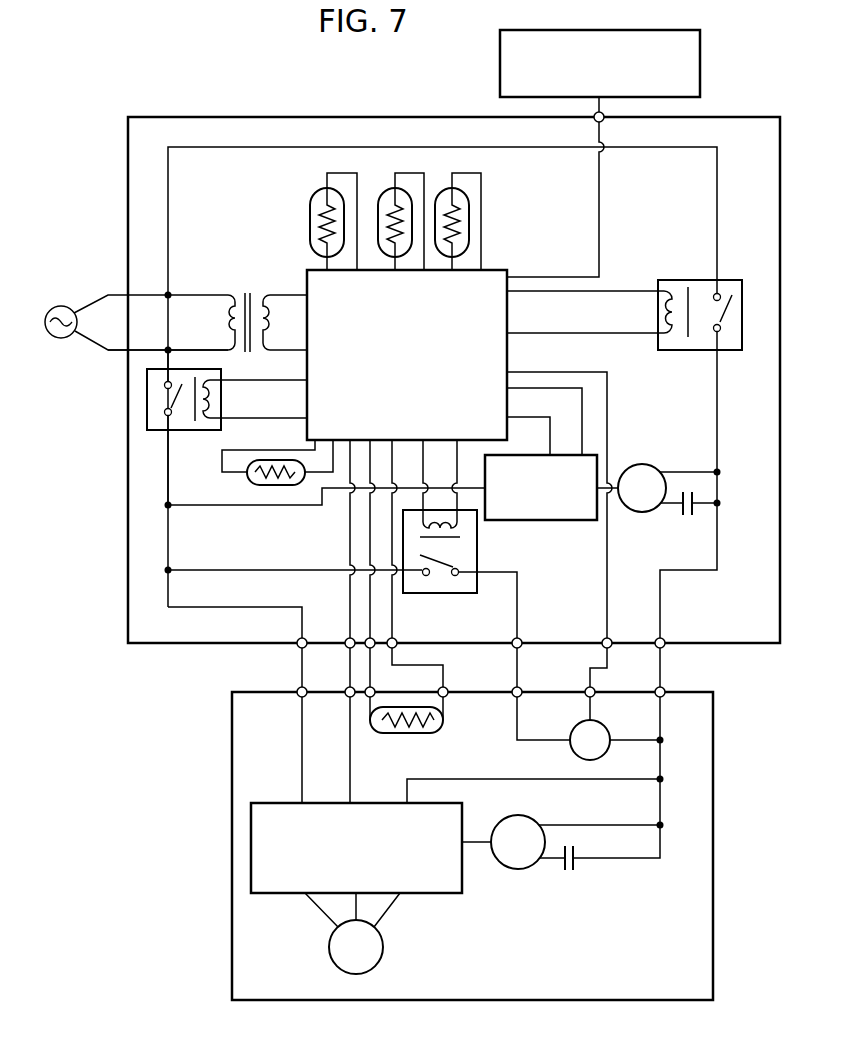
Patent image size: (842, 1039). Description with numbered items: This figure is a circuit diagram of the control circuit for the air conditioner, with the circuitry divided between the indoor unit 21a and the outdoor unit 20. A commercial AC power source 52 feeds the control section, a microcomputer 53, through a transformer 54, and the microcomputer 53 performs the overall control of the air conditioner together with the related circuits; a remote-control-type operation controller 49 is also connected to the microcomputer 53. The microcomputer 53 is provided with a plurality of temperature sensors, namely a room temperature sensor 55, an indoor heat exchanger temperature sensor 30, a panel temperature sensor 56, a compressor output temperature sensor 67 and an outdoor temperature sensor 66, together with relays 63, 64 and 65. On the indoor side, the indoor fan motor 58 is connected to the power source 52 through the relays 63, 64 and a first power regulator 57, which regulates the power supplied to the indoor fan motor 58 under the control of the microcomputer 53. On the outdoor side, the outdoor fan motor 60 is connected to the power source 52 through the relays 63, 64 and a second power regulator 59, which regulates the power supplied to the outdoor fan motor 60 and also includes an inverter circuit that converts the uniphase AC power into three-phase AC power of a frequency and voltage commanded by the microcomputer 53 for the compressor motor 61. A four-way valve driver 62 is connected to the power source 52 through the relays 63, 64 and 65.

The operation controller 49 is at (500, 53).
The indoor unit 21a is at (128, 187).
The outdoor unit 20 is at (247, 785).
The commercial AC power source 52 is at (59, 306).
The transformer 54 is at (258, 272).
The indoor heat exchanger temperature sensor 30 is at (311, 205).
The room temperature sensor 55 is at (381, 206).
The panel temperature sensor 56 is at (465, 240).
The microcomputer 53 is at (509, 270).
The relay 63 is at (152, 413).
The relay 64 is at (684, 258).
The relay 65 is at (478, 554).
The compressor output temperature sensor 67 is at (258, 484).
The outdoor temperature sensor 66 is at (425, 733).
The first power regulator 57 is at (580, 522).
The indoor fan motor 58 is at (650, 466).
The second power regulator 59 is at (392, 803).
The outdoor fan motor 60 is at (527, 868).
The compressor motor 61 is at (384, 953).
The four-way valve driver 62 is at (573, 752).